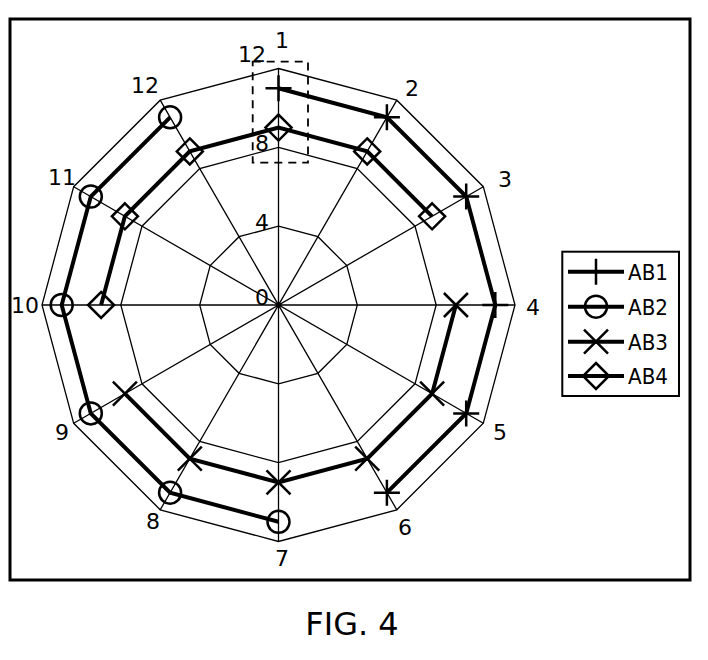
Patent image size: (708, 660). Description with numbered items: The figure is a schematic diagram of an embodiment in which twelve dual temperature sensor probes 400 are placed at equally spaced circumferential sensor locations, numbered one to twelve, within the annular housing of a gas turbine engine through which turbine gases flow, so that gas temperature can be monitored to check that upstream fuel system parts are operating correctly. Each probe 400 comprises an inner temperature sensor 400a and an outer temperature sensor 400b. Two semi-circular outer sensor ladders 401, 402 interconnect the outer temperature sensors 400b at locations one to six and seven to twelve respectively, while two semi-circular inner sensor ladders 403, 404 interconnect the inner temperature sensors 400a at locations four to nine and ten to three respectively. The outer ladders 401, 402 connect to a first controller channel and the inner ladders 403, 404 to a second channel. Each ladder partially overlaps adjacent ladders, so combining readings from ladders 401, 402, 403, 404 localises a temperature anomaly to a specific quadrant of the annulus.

The dual temperature sensor probe 400 is at (308, 62).
The inner temperature sensor 400a is at (278, 114).
The outer temperature sensor 400b is at (278, 86).
The outer sensor ladder 401 is at (420, 143).
The outer sensor ladder 402 is at (123, 160).
The inner sensor ladder 403 is at (408, 434).
The inner sensor ladder 404 is at (422, 192).